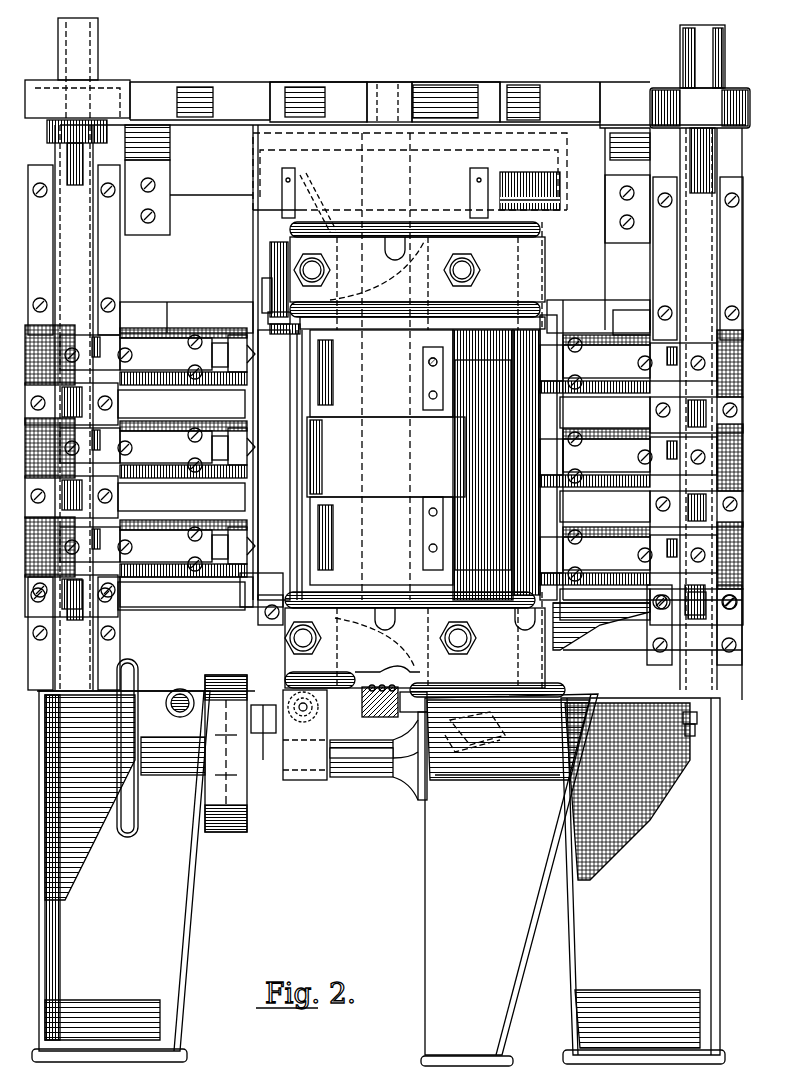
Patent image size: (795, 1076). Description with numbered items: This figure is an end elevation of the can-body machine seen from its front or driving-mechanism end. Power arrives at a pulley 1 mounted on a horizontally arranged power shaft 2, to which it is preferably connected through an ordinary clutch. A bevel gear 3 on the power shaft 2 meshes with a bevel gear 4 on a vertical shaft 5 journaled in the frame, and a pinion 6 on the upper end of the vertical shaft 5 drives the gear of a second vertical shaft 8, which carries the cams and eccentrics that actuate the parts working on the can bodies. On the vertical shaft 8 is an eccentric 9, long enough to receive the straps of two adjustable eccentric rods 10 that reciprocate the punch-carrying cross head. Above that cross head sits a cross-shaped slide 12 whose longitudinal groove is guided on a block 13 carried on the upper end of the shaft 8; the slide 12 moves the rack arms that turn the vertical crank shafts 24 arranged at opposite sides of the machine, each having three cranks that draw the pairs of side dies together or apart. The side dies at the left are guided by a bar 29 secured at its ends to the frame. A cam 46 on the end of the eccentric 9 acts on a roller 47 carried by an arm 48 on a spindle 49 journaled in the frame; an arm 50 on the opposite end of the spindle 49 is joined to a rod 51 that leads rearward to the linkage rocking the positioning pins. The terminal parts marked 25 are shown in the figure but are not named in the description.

The pulley 1 is at (208, 753).
The power shaft 2 is at (176, 750).
The bevel gear 3 is at (413, 808).
The bevel gear 4 is at (557, 735).
The vertical shaft 5 is at (533, 413).
The pinion 6 is at (547, 188).
The vertical shaft 8 is at (380, 672).
The eccentric 9 is at (386, 457).
The eccentric rods 10 is at (381, 457).
The slide 12 is at (453, 85).
The block 13 is at (382, 98).
The vertical crank shafts 24 is at (80, 64).
The terminal contacts 25 is at (384, 475).
The bar 29 is at (280, 465).
The cam 46 is at (347, 330).
The roller 47 is at (284, 344).
The arm 48 is at (277, 313).
The spindle 49 is at (277, 303).
The arm 50 is at (273, 247).
The rod 51 is at (330, 230).